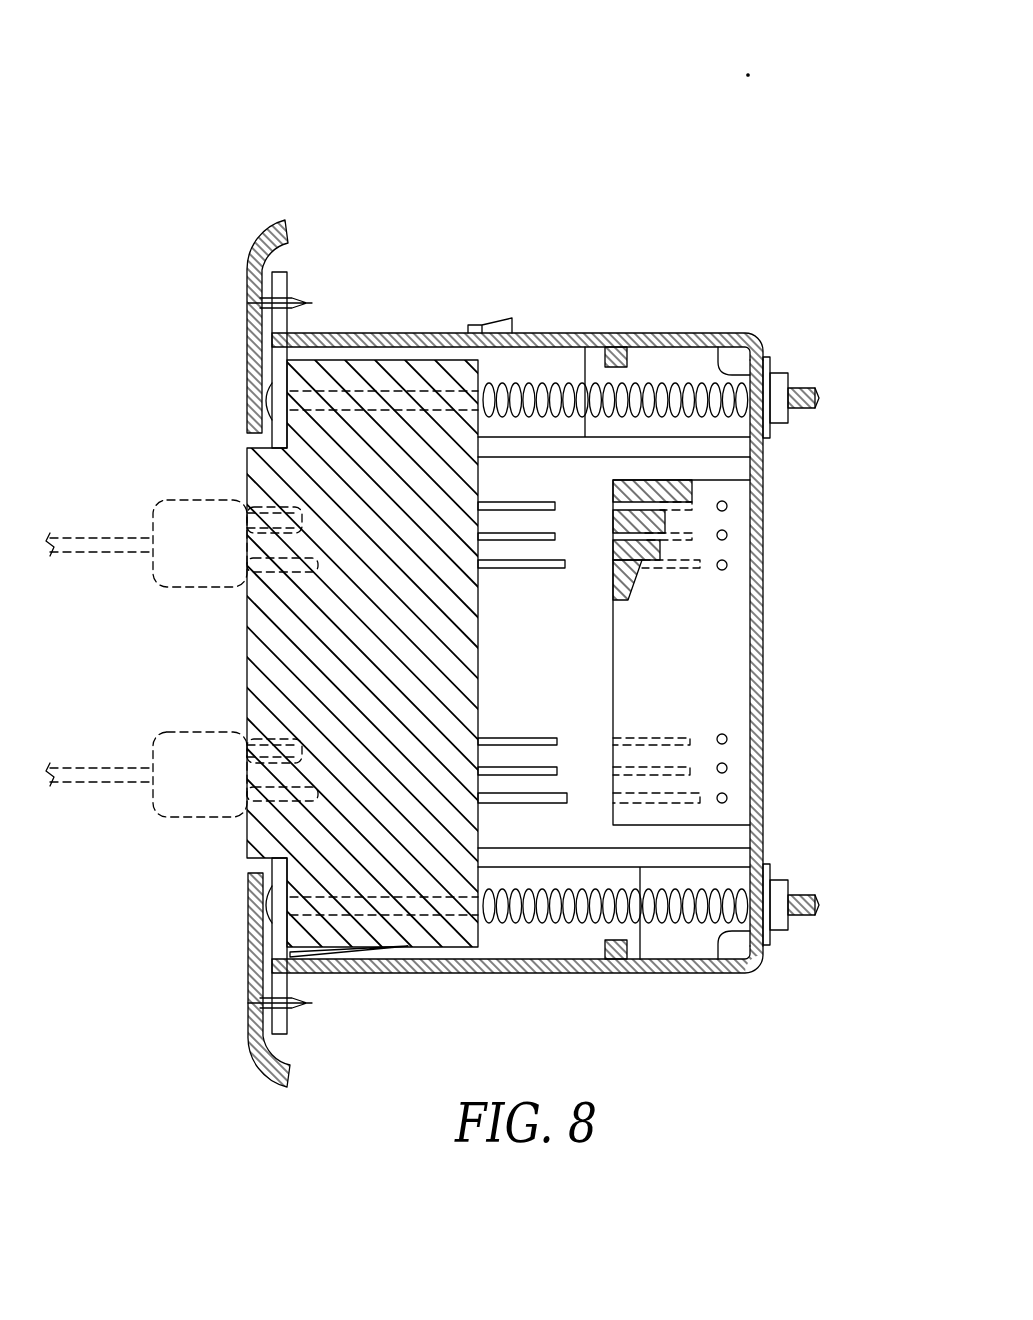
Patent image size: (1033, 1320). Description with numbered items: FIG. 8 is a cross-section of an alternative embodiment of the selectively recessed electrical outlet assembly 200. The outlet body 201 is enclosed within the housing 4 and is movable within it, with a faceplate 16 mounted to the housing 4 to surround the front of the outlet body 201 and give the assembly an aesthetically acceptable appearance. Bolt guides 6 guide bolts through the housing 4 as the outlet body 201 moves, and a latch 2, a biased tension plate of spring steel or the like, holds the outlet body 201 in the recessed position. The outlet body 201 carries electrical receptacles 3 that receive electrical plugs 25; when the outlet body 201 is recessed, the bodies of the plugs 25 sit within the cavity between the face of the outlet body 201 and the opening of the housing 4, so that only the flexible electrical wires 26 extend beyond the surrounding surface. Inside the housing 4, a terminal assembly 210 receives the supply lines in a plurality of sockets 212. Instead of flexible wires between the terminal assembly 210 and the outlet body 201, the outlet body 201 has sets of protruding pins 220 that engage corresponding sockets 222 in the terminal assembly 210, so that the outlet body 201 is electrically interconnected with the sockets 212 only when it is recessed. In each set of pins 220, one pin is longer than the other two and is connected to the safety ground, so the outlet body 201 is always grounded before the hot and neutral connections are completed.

The electrical outlet assembly 200 is at (523, 210).
The faceplate 16 is at (268, 238).
The bolt guides 6 is at (282, 372).
The housing 4 is at (548, 333).
The electrical receptacles 3 is at (270, 520).
The outlet body 201 is at (390, 614).
The sockets 222 is at (607, 563).
The protruding pins 220 is at (557, 500).
The sockets 212 is at (727, 506).
The terminal assembly 210 is at (733, 657).
The electrical plugs 25 is at (227, 577).
The electrical wires 26 is at (63, 547).
The latch 2 is at (363, 962).